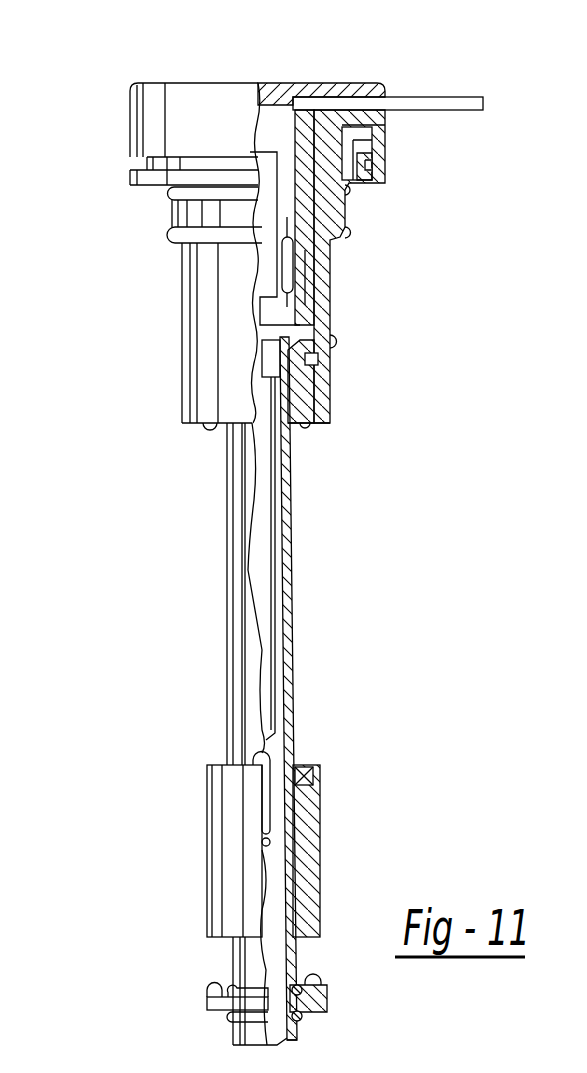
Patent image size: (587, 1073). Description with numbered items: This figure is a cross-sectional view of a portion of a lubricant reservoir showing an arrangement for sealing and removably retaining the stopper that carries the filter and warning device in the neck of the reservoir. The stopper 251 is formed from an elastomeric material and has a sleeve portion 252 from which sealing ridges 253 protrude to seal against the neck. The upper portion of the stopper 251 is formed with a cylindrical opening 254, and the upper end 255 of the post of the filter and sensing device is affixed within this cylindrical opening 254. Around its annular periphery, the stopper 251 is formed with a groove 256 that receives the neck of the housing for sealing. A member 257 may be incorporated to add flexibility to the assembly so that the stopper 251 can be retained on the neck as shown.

The stopper 251 is at (119, 101).
The sleeve portion 252 is at (333, 277).
The sealing ridges 253 is at (347, 230).
The cylindrical opening 254 is at (297, 113).
The upper end 255 is at (349, 100).
The groove 256 is at (362, 154).
The flexibility member 257 is at (376, 163).